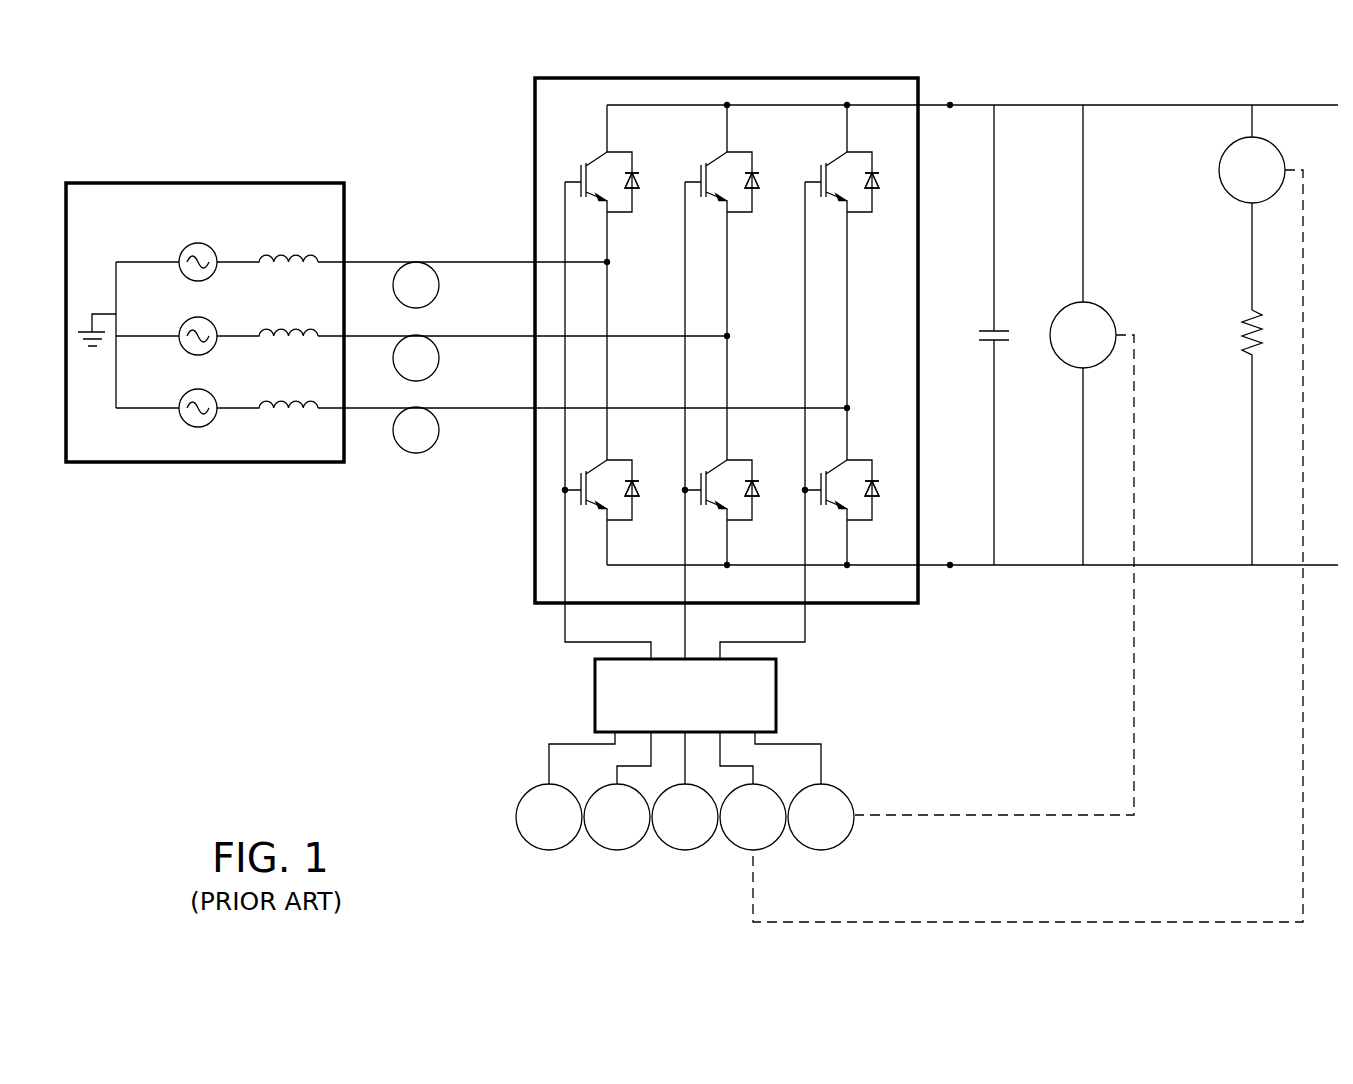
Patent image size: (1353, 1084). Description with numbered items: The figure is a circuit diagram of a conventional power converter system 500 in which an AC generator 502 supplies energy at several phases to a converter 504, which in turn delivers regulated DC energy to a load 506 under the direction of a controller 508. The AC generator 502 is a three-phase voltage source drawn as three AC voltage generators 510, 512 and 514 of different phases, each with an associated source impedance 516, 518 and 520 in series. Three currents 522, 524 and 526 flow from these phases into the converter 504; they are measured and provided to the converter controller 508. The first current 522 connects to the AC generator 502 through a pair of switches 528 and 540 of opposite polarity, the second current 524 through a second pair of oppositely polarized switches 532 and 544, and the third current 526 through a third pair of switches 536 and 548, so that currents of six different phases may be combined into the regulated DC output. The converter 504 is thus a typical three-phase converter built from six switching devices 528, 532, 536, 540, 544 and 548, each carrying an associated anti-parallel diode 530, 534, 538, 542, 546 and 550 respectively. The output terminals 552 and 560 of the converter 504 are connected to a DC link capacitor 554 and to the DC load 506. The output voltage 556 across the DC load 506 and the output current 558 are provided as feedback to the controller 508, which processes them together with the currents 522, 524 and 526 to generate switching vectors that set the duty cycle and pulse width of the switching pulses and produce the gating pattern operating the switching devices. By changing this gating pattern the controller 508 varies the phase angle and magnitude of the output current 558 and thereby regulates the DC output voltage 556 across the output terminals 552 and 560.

The power converter system 500 is at (1007, 701).
The AC generator 502 is at (218, 462).
The converter 504 is at (534, 582).
The load 506 is at (1240, 322).
The controller 508 is at (778, 696).
The AC voltage generator 510 is at (182, 252).
The AC voltage generator 512 is at (182, 326).
The AC voltage generator 514 is at (182, 398).
The source impedance 516 is at (282, 252).
The source impedance 518 is at (282, 326).
The source impedance 520 is at (282, 398).
The first current 522 is at (438, 294).
The second current 524 is at (438, 367).
The third current 526 is at (438, 439).
The switching device 528 is at (580, 166).
The anti-parallel diode 530 is at (633, 180).
The switching device 532 is at (700, 192).
The anti-parallel diode 534 is at (753, 180).
The switching device 536 is at (820, 192).
The anti-parallel diode 538 is at (873, 180).
The switching device 540 is at (567, 495).
The anti-parallel diode 542 is at (638, 490).
The switching device 544 is at (700, 502).
The anti-parallel diode 546 is at (758, 490).
The switching device 548 is at (820, 502).
The anti-parallel diode 550 is at (878, 490).
The output terminal 552 is at (950, 105).
The DC link capacitor 554 is at (983, 338).
The output voltage 556 is at (1218, 172).
The output current 558 is at (1068, 304).
The output terminal 560 is at (950, 565).